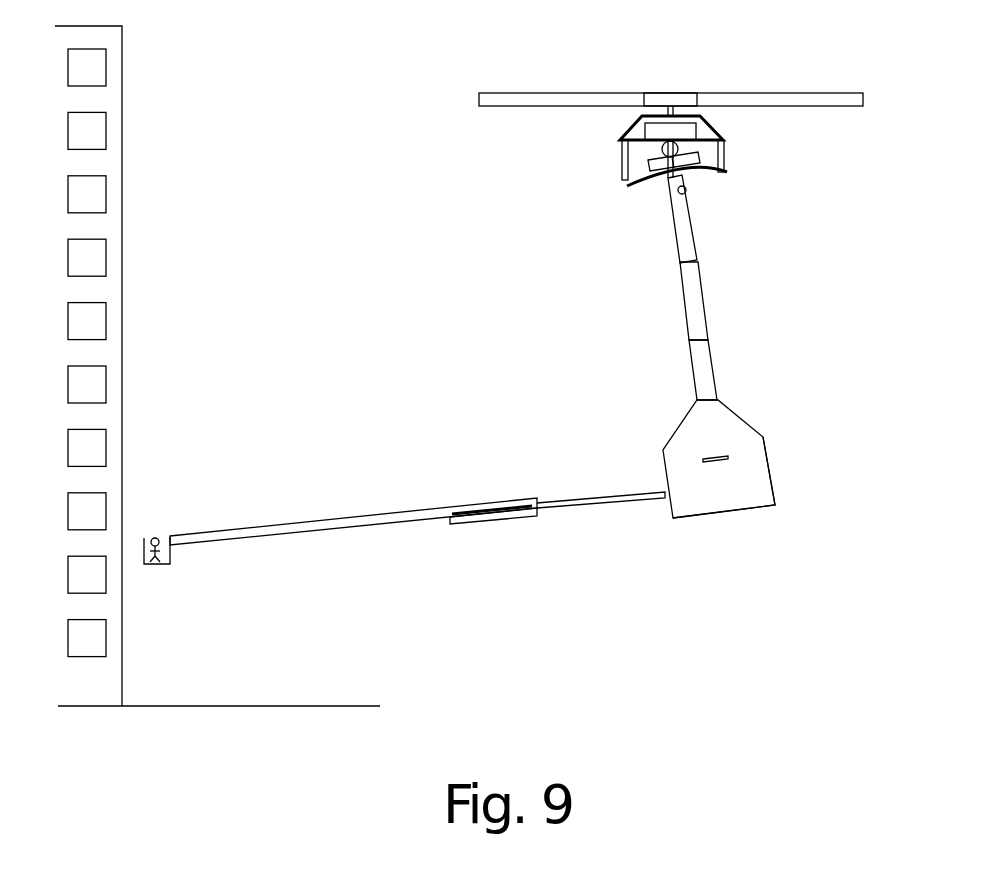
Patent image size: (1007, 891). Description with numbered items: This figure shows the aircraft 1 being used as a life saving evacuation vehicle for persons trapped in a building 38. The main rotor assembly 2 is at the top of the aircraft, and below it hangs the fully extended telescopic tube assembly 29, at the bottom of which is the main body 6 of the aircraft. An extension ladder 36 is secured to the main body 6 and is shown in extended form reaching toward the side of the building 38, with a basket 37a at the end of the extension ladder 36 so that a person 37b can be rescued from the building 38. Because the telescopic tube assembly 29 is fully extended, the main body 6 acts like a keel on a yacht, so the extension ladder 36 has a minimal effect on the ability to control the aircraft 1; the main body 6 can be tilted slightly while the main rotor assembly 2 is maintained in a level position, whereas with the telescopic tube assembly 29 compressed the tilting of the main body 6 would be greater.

The aircraft 1 is at (720, 550).
The main rotor assembly 2 is at (662, 82).
The main body 6 is at (753, 497).
The telescopic tube assembly 29 is at (725, 288).
The extension ladder 36 is at (390, 493).
The basket 37a is at (187, 570).
The person 37b is at (157, 538).
The building 38 is at (150, 282).